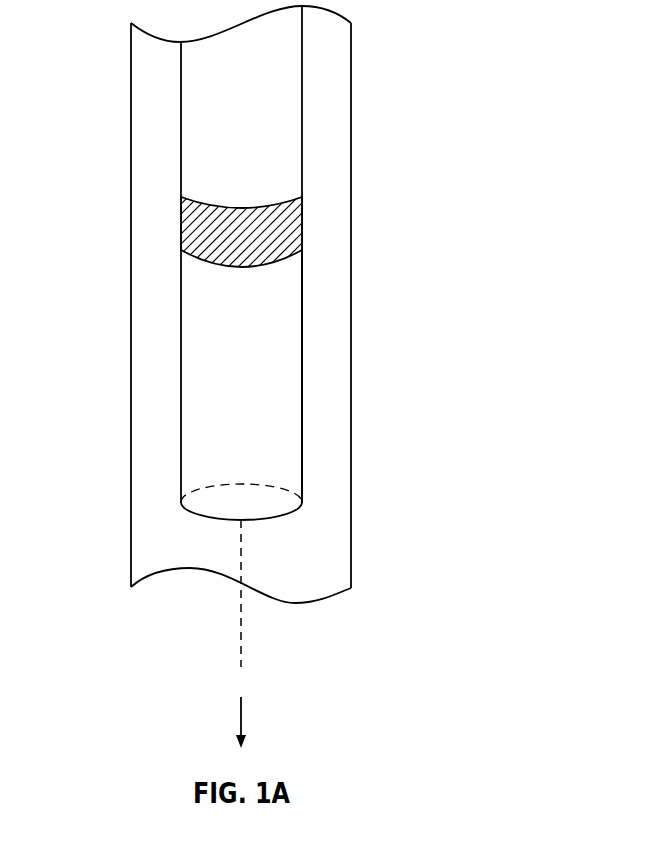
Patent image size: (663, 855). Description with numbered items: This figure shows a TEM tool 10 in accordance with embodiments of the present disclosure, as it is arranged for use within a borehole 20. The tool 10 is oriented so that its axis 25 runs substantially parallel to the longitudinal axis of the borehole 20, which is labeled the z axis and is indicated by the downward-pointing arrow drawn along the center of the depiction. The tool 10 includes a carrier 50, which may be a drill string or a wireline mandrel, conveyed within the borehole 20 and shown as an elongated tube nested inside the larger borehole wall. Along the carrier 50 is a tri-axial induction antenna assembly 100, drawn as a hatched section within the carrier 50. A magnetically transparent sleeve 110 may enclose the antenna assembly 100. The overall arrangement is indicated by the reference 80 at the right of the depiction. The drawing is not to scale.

The tool 10 is at (328, 309).
The borehole 20 is at (167, 547).
The axis 25 is at (238, 622).
The carrier 50 is at (302, 142).
The assembly 80 is at (510, 233).
The tri-axial induction antenna assembly 100 is at (156, 218).
The magnetically transparent sleeve 110 is at (302, 225).